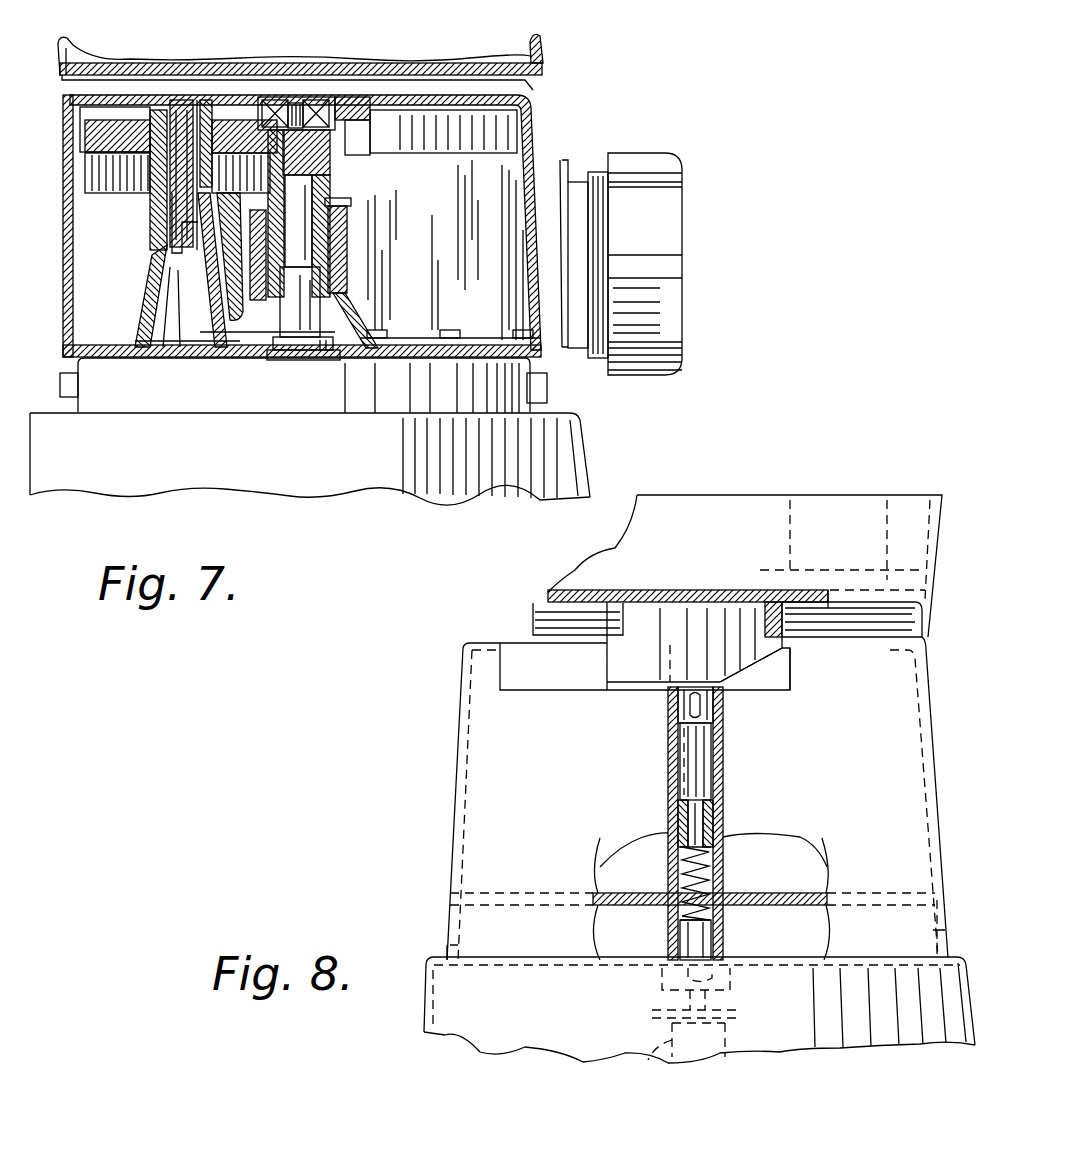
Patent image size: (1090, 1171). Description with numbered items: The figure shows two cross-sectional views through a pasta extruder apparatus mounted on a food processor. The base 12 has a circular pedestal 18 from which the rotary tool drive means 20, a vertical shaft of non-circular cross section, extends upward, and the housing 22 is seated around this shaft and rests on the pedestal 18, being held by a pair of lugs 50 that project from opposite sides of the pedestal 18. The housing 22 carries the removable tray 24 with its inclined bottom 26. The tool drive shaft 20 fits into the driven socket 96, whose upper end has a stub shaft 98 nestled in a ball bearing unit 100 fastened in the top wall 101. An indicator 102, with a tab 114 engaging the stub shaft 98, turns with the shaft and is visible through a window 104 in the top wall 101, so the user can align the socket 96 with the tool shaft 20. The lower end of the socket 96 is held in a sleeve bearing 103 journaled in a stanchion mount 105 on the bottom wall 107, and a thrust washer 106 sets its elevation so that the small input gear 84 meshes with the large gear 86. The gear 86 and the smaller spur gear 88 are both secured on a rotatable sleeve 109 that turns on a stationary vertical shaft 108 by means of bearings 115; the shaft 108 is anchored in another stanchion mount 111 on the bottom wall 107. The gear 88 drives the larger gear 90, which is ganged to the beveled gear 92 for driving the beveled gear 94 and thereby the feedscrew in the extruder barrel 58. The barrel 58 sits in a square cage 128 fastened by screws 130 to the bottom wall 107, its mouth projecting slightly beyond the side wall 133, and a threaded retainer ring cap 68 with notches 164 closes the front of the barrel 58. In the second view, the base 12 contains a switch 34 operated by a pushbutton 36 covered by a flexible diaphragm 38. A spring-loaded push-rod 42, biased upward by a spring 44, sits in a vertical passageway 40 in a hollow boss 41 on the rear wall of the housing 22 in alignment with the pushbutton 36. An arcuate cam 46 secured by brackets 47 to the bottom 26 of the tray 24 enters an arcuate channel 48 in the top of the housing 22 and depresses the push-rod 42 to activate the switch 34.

In FIG. 7, the base 12 is at (590, 455).
In FIG. 8, the base 12 is at (425, 1018).
In FIG. 7, the pedestal 18 is at (433, 397).
In FIG. 7, the rotary tool drive means 20 is at (322, 278).
In FIG. 7, the housing 22 is at (538, 125).
In FIG. 8, the housing 22 is at (455, 778).
In FIG. 7, the removable tray 24 is at (552, 70).
In FIG. 8, the removable tray 24 is at (783, 490).
In FIG. 8, the inclined bottom 26 is at (593, 592).
In FIG. 8, the switch 34 is at (660, 1048).
In FIG. 8, the pushbutton 36 is at (724, 994).
In FIG. 8, the flexible diaphragm 38 is at (730, 972).
In FIG. 8, the vertical passageway 40 is at (722, 822).
In FIG. 8, the hollow boss 41 is at (723, 780).
In FIG. 8, the push-rod 42 is at (695, 700).
In FIG. 8, the spring 44 is at (703, 860).
In FIG. 8, the arcuate-shaped cam 46 is at (737, 660).
In FIG. 8, the brackets 47 is at (705, 612).
In FIG. 8, the arcuate channel 48 is at (517, 653).
In FIG. 7, the lugs 50 is at (74, 390).
In FIG. 8, the lugs 50 is at (445, 900).
In FIG. 7, the extruder barrel 58 is at (578, 183).
In FIG. 7, the retainer ring cap 68 is at (665, 232).
In FIG. 7, the input gear 84 is at (362, 148).
In FIG. 7, the gear 86 is at (72, 133).
In FIG. 7, the gear 88 is at (150, 165).
In FIG. 7, the gear 90 is at (150, 170).
In FIG. 7, the beveled gear 92 is at (175, 300).
In FIG. 7, the beveled gear 94 is at (207, 333).
In FIG. 7, the driven socket 96 is at (300, 200).
In FIG. 7, the stub shaft 98 is at (264, 100).
In FIG. 7, the ball bearing unit 100 is at (390, 95).
In FIG. 7, the top wall 101 is at (445, 112).
In FIG. 7, the indicator 102 is at (305, 100).
In FIG. 7, the sleeve bearing 103 is at (340, 250).
In FIG. 7, the window 104 is at (335, 112).
In FIG. 7, the stanchion mount 105 is at (340, 275).
In FIG. 7, the thrust washer 106 is at (338, 225).
In FIG. 7, the bottom wall 107 is at (405, 348).
In FIG. 8, the bottom wall 107 is at (808, 875).
In FIG. 7, the stationary vertical shaft 108 is at (173, 120).
In FIG. 7, the rotatable sleeve 109 is at (165, 137).
In FIG. 7, the stanchion mount 111 is at (165, 260).
In FIG. 7, the tab 114 is at (229, 100).
In FIG. 7, the bearings 115 is at (165, 190).
In FIG. 7, the stationary cage 128 is at (465, 278).
In FIG. 7, the screws 130 is at (513, 332).
In FIG. 7, the side wall 133 is at (526, 185).
In FIG. 7, the notches 164 is at (670, 195).
In FIG. 8, the notches 164 is at (843, 619).